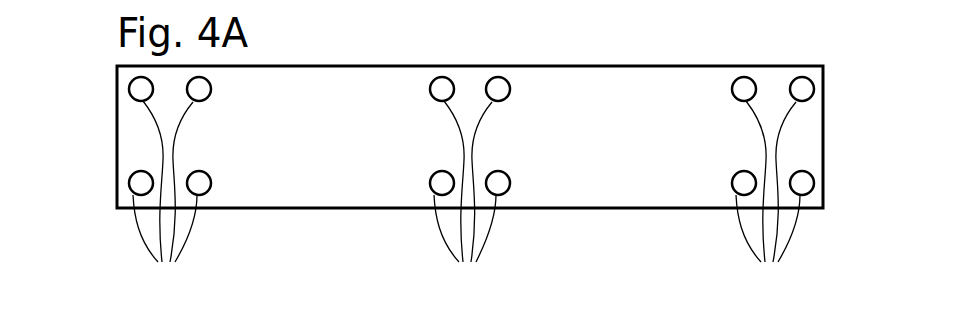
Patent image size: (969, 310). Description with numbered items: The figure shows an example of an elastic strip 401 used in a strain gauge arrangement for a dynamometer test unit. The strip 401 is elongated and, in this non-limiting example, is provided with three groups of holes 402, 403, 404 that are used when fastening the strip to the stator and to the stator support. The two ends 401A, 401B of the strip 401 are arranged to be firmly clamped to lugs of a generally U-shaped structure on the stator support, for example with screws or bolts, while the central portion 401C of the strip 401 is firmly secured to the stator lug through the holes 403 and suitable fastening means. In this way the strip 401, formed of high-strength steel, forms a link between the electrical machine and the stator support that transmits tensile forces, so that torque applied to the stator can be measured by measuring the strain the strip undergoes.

The elastic strip 401 is at (339, 60).
The end of the strip 401A is at (153, 137).
The end of the strip 401B is at (803, 137).
The central portion of the strip 401C is at (466, 87).
The group of holes 402 is at (170, 183).
The group of holes 403 is at (470, 183).
The group of holes 404 is at (773, 183).